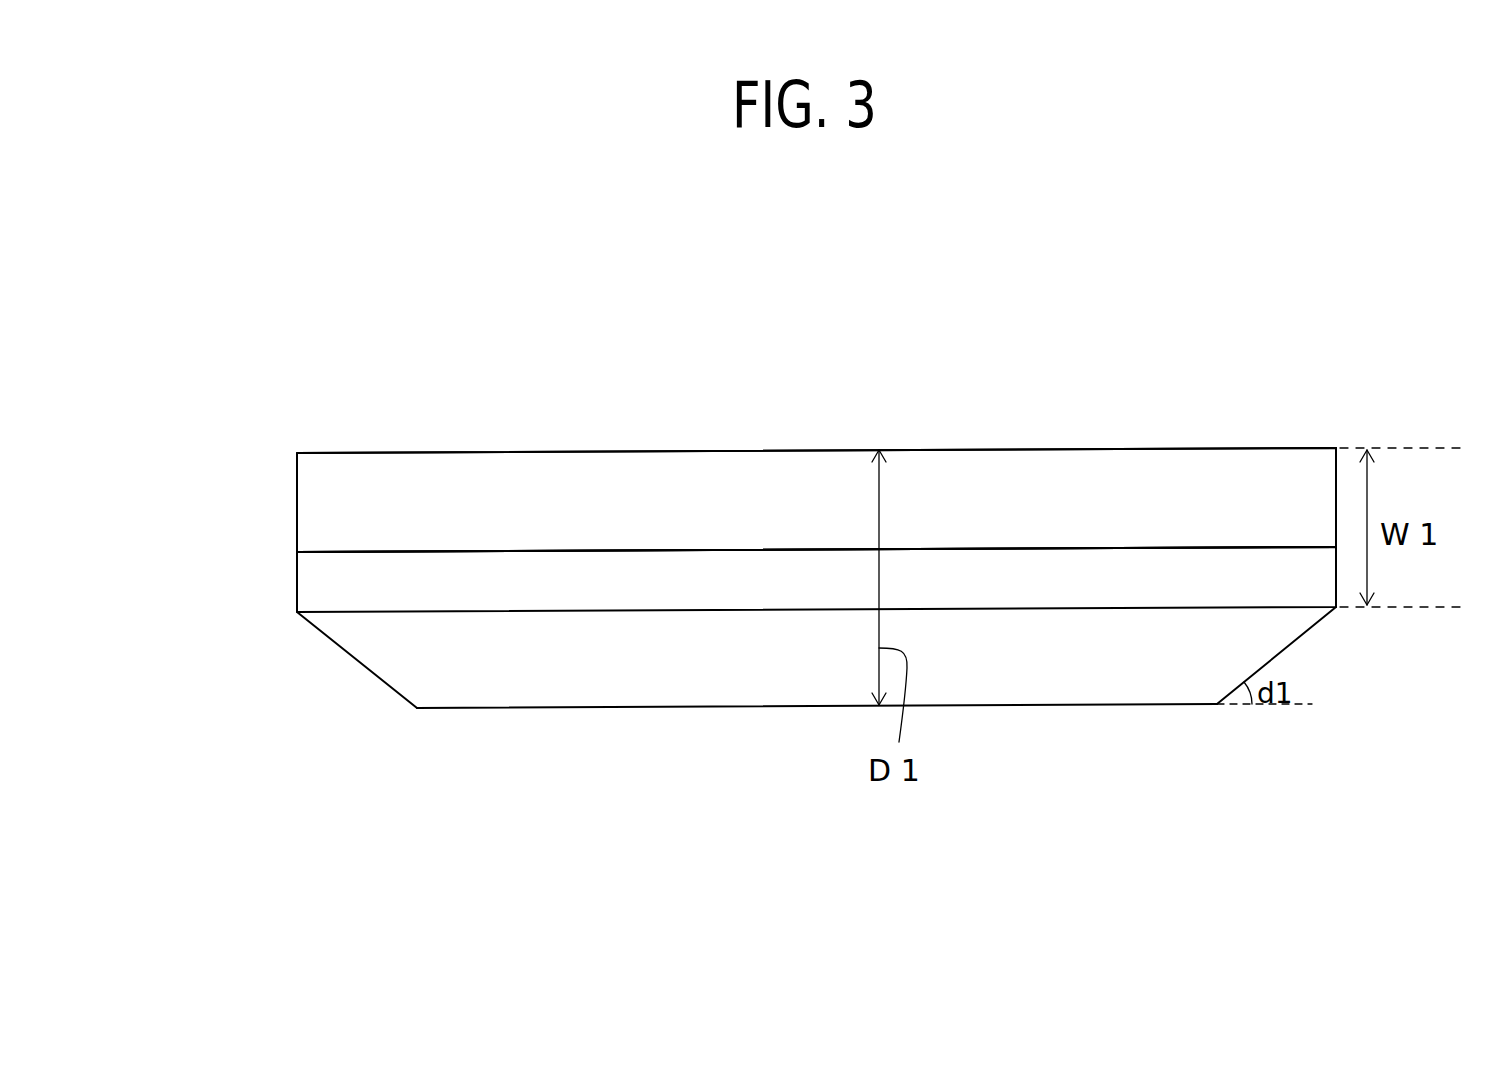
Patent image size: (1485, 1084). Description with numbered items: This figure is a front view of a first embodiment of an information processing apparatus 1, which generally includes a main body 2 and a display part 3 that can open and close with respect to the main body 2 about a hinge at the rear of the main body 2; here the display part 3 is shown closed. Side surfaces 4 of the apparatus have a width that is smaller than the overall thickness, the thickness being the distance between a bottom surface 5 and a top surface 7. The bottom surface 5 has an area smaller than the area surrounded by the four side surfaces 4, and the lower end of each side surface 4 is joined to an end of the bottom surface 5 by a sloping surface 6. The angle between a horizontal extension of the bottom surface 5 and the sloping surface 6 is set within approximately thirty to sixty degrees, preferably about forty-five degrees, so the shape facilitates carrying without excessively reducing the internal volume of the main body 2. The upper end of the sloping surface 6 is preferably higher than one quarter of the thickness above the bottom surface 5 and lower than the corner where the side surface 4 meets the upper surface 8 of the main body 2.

The information processing apparatus 1 is at (1114, 245).
The main body 2 is at (327, 573).
The display part 3 is at (327, 493).
The side surface 4 is at (1340, 456).
The bottom surface 5 is at (1017, 705).
The sloping surface 6 is at (571, 689).
The top surface 7 is at (817, 450).
The upper surface 8 is at (785, 550).